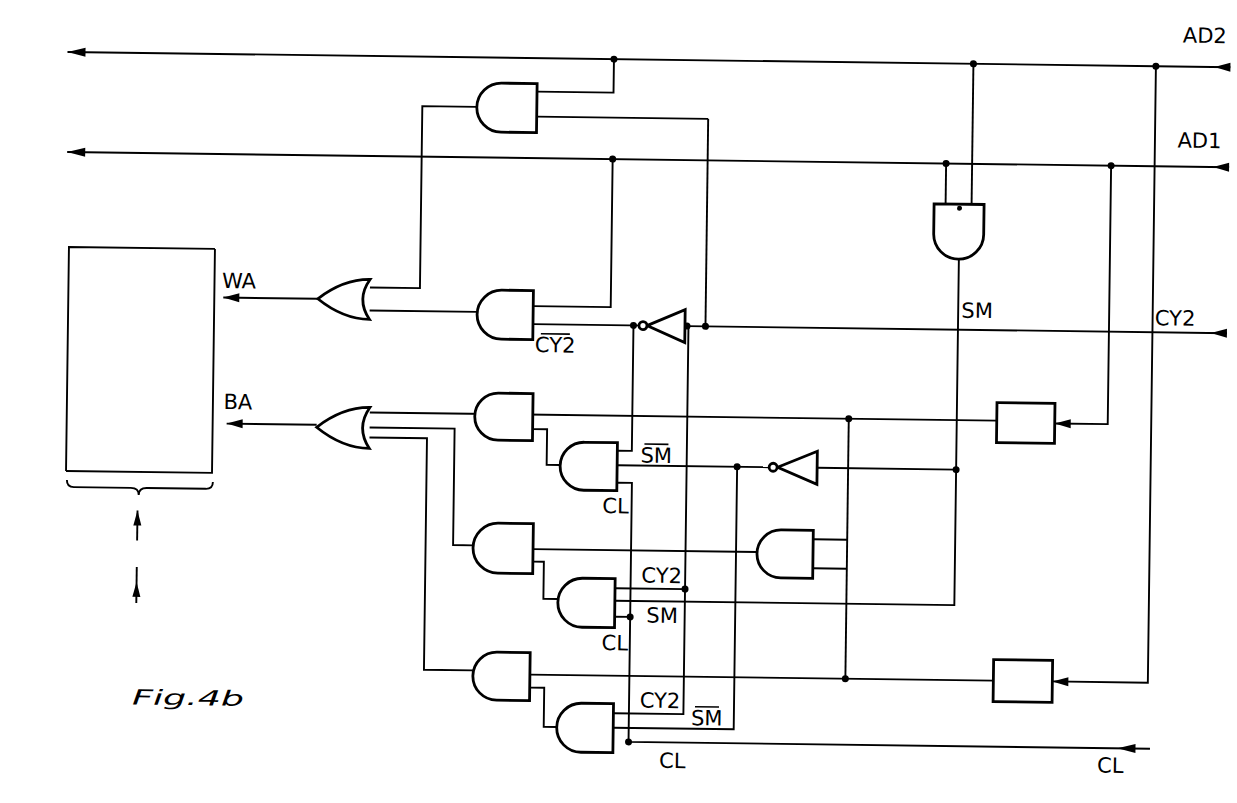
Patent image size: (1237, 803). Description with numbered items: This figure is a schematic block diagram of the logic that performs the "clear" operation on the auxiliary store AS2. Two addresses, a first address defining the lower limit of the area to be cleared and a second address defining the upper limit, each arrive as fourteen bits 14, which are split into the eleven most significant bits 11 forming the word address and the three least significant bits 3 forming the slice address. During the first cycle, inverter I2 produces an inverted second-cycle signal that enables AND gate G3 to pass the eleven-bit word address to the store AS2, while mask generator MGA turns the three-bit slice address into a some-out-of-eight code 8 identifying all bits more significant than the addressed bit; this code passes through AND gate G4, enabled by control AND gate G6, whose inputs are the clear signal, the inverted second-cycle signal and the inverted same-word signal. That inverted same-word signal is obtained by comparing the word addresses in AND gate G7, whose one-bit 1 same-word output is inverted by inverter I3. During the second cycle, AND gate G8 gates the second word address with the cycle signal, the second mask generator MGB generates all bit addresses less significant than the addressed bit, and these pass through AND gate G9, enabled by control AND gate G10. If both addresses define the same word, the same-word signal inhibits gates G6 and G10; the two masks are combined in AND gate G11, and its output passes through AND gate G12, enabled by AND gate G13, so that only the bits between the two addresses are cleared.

The eleven most significant bits 11 is at (1076, 52).
The fourteen bits of an address 14 is at (1194, 52).
The some-out-of-eight code 8 is at (270, 422).
The three least significant address bits 3 is at (1098, 683).
The SM signal 1 is at (964, 279).
The AND gate G3 is at (505, 301).
The AND gate G4 is at (503, 403).
The control AND gate G6 is at (589, 455).
The AND gate G7 is at (980, 232).
The AND gate G8 is at (506, 122).
The AND gate G9 is at (502, 662).
The control AND gate G10 is at (584, 715).
The AND gate G11 is at (784, 567).
The AND gate G12 is at (503, 534).
The AND gate G13 is at (587, 589).
The inverter I2 is at (662, 310).
The inverter I3 is at (793, 477).
The mask generator MGA is at (1025, 423).
The second mask generator MGB is at (1023, 681).
The auxiliary store AS2 is at (141, 359).